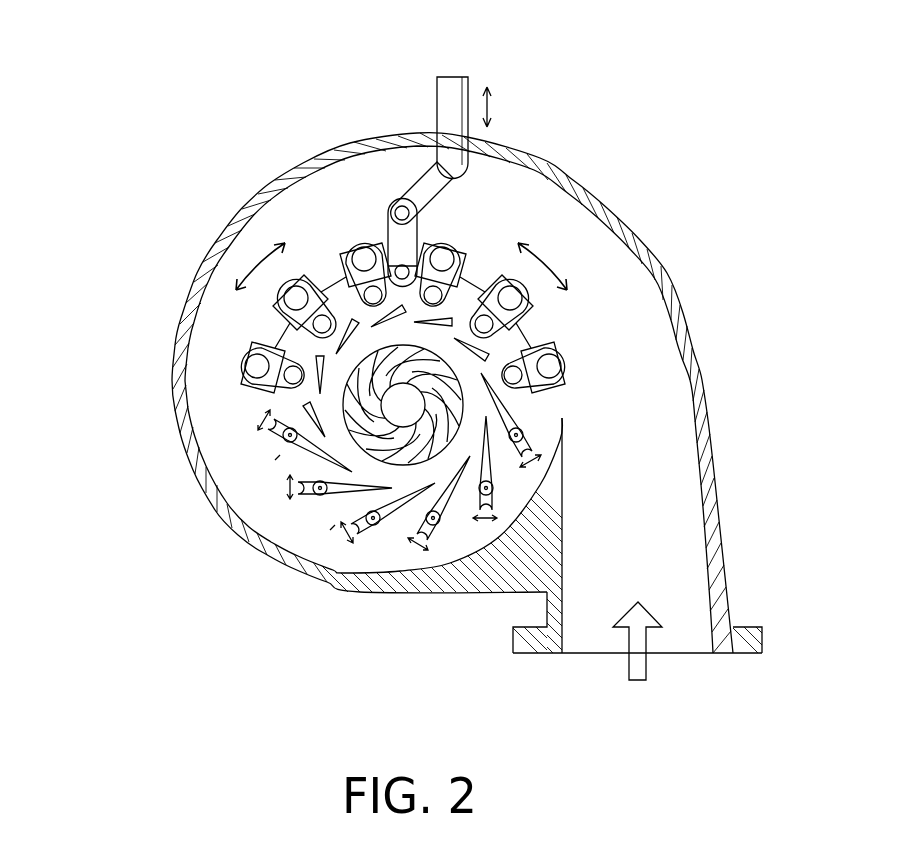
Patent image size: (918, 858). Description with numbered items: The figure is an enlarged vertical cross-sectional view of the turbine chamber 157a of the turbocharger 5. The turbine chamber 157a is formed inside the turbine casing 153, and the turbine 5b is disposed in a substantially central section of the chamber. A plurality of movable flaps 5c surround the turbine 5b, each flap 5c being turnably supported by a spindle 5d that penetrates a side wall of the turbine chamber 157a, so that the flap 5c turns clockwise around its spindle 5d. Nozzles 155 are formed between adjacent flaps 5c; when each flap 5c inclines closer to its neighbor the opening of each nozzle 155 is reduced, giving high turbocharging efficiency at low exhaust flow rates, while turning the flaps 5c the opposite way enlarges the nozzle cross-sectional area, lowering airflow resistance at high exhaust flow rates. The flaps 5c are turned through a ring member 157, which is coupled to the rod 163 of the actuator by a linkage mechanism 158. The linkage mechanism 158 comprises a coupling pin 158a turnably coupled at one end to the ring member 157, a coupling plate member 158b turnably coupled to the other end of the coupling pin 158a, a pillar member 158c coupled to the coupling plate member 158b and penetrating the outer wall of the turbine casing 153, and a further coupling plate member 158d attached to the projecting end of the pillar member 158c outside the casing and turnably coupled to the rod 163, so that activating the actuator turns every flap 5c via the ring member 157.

The turbocharger 5 is at (631, 164).
The turbine 5b is at (347, 375).
The flap 5c is at (255, 458).
The spindle 5d is at (300, 505).
The turbine casing 153 is at (661, 257).
The nozzle 155 is at (275, 460).
The ring member 157 is at (545, 418).
The turbine chamber 157a is at (671, 554).
The linkage mechanism 158 is at (378, 186).
The coupling pin 158a is at (440, 195).
The coupling plate member 158b is at (393, 245).
The pillar member 158c is at (396, 228).
The coupling plate member 158d is at (405, 205).
The rod 163 is at (447, 74).